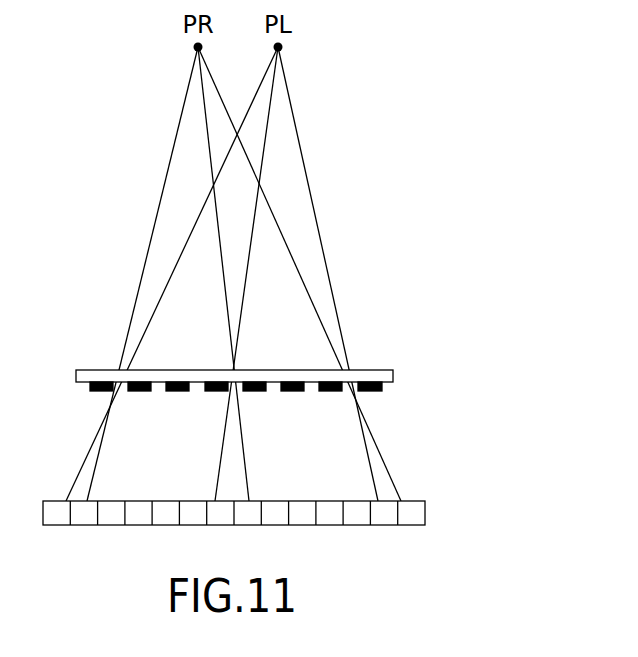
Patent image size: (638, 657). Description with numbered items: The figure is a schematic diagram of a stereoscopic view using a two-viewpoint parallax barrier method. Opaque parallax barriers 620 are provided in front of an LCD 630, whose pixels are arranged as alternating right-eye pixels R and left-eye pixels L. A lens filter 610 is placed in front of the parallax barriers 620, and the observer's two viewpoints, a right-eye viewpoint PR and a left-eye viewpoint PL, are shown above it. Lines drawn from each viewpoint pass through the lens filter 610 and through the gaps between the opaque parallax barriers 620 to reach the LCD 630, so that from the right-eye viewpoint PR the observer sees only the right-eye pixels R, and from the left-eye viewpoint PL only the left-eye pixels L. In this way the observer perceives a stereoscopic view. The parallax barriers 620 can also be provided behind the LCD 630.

The lens filter 610 is at (393, 374).
The opaque parallax barriers 620 is at (383, 390).
The LCD 630 is at (425, 502).